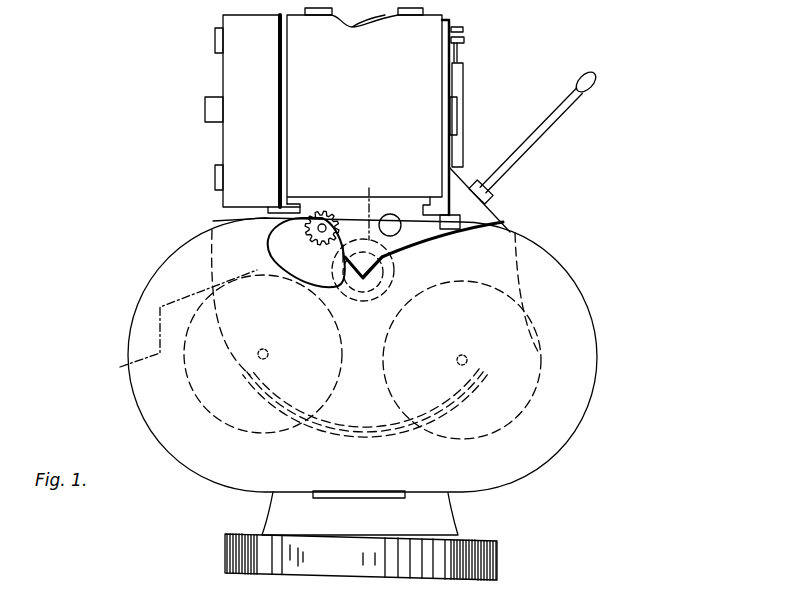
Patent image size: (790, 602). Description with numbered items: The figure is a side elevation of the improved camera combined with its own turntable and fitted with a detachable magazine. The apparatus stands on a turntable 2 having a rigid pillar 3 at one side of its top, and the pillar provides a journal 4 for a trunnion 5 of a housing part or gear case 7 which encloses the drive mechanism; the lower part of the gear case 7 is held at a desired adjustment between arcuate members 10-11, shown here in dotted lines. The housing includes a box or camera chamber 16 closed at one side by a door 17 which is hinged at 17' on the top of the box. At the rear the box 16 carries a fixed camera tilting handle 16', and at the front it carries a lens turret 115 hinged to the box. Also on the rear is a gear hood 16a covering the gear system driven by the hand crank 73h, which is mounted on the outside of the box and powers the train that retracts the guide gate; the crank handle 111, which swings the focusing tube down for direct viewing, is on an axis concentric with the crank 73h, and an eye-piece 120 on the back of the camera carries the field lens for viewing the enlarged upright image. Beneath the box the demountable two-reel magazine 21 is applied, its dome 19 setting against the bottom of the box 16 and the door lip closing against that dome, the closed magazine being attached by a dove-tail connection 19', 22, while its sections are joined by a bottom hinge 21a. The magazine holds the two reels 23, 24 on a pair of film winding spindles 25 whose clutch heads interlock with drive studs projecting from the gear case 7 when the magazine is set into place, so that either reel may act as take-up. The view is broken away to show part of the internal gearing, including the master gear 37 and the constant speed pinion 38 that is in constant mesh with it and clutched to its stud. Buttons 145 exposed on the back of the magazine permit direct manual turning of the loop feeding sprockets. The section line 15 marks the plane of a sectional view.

The turntable 2 is at (497, 563).
The rigid pillar 3 is at (462, 527).
The journal 4 is at (362, 249).
The trunnion 5 is at (394, 272).
The gear case 7 is at (213, 221).
The arcuate members 10-11 is at (363, 437).
The section line 15 is at (244, 287).
The camera box 16 is at (481, 174).
The gear hood 16a is at (463, 82).
The camera tilting handle 16' is at (534, 136).
The door 17 is at (364, 109).
The hinge 17' is at (364, 31).
The dome 19 is at (468, 245).
The dove-tail connection 19' is at (371, 117).
The two-reel magazine 21 is at (590, 348).
The bottom hinge 21a is at (370, 495).
The dove-tail connection 22 is at (292, 205).
The reel 23 is at (497, 430).
The reel 24 is at (247, 432).
The film winding spindles 25 is at (462, 355).
The master gear 37 is at (298, 240).
The constant speed pinion 38 is at (316, 216).
The hand crank 73h is at (463, 30).
The crank handle 111 is at (456, 57).
The lens turret 115 is at (235, 69).
The eye-piece 120 is at (455, 110).
The buttons 145 is at (402, 231).